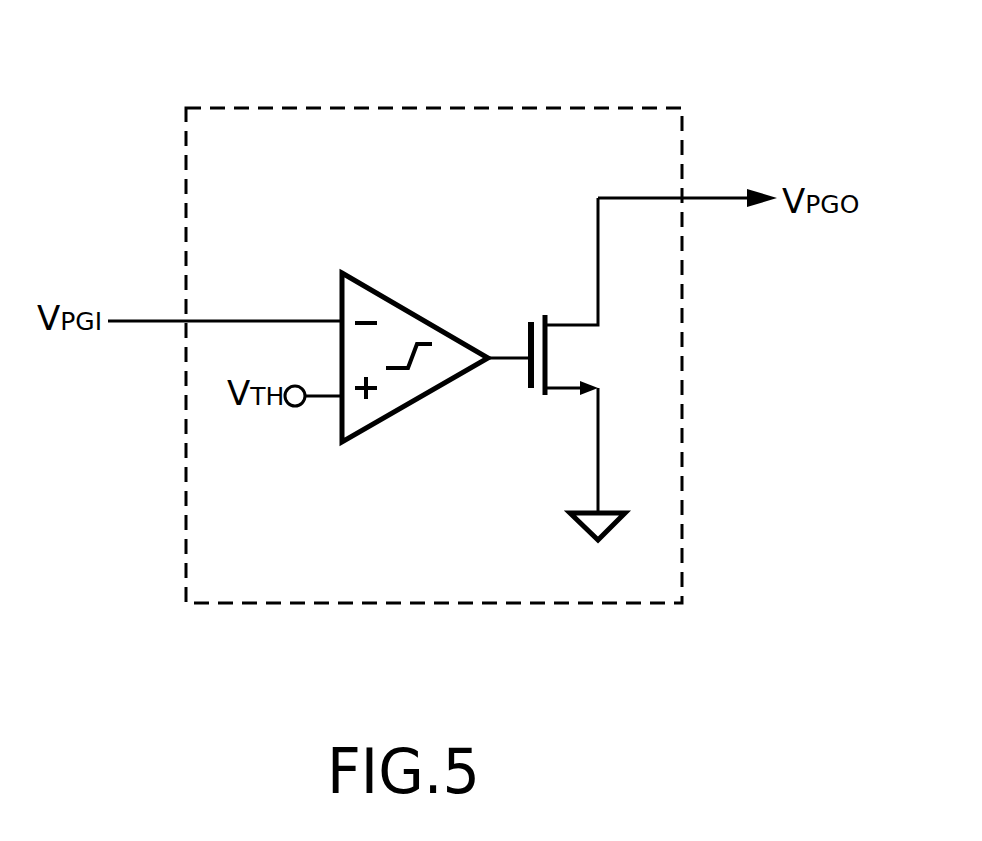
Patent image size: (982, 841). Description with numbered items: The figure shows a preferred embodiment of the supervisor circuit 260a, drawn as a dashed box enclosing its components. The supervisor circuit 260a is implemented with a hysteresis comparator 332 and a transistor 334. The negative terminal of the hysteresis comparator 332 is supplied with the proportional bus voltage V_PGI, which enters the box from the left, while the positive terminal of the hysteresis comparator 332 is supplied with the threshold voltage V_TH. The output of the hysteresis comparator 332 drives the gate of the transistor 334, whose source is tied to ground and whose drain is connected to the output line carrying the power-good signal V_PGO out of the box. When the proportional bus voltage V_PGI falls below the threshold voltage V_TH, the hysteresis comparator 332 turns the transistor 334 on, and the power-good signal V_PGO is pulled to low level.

The supervisor circuit 260a is at (570, 107).
The hysteresis comparator 332 is at (413, 305).
The transistor 334 is at (600, 360).